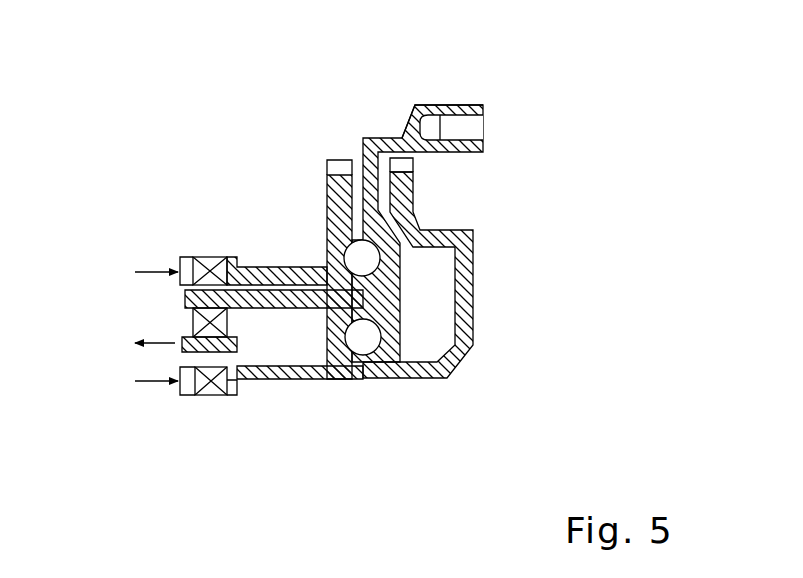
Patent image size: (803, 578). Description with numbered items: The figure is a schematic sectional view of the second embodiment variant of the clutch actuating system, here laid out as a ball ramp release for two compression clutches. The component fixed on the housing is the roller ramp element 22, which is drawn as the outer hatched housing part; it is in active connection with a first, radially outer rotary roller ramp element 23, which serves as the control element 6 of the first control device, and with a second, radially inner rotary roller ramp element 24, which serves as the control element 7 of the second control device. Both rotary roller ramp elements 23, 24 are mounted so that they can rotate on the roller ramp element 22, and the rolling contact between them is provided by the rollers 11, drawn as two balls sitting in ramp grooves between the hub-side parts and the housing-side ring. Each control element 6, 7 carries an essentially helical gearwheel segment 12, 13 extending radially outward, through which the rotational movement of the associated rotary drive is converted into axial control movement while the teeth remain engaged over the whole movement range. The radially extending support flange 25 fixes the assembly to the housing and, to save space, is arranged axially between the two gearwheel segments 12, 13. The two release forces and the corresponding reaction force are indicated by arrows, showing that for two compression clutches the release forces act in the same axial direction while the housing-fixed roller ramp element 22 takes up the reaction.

The control element 6 is at (323, 214).
The control element 7 is at (285, 382).
The rollers 11 is at (372, 268).
The gearwheel segment 12 is at (328, 165).
The gearwheel segment 13 is at (402, 168).
The roller ramp element 22 is at (395, 270).
The first rotary roller ramp element 23 is at (278, 274).
The second rotary roller ramp element 24 is at (350, 350).
The support flange 25 is at (405, 118).